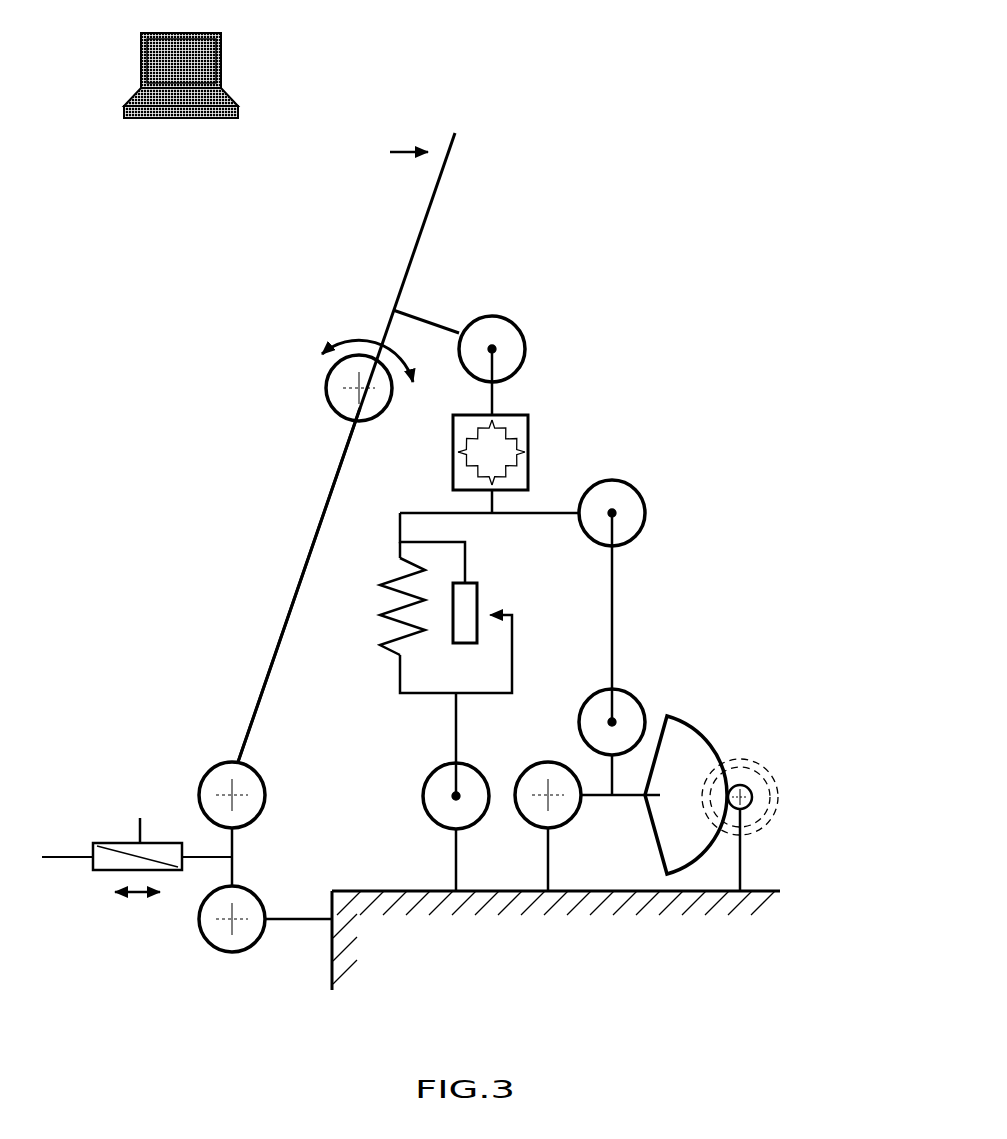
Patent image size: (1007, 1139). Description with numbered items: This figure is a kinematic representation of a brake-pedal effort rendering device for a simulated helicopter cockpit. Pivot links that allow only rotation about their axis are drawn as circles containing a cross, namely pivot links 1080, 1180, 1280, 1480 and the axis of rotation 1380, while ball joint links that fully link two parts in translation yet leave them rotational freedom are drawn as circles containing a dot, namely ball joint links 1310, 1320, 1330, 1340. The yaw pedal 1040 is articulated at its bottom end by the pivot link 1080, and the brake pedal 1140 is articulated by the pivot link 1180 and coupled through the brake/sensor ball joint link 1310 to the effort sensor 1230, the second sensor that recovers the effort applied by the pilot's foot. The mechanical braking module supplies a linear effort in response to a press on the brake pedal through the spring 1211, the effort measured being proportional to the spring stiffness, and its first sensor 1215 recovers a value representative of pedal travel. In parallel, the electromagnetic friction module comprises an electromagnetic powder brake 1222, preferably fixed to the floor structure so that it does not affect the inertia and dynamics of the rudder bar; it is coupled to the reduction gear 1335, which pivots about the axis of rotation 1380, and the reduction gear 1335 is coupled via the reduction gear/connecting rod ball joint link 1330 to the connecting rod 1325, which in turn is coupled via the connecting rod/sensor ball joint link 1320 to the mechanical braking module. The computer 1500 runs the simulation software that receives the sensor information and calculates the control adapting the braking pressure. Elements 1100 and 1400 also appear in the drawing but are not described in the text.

The computer 1500 is at (212, 30).
The brake pedal 1140 is at (435, 192).
The yaw pedal 1040 is at (318, 520).
The pivot link 1180 is at (328, 400).
The brake/sensor ball joint link 1310 is at (515, 318).
The effort sensor 1230 is at (530, 430).
The connecting rod/sensor ball joint link 1320 is at (640, 490).
The connecting rod 1325 is at (614, 607).
The reduction gear/connecting rod ball joint link 1330 is at (633, 690).
The reduction gear 1335 is at (622, 798).
The spring 1211 is at (365, 608).
The first sensor 1215 is at (478, 598).
The ball joint link 1340 is at (423, 780).
The axis of rotation 1380 is at (525, 765).
The electromagnetic powder brake 1222 is at (762, 762).
The pivot link 1480 is at (770, 807).
The pivot link 1080 is at (215, 770).
The pivot link 1280 is at (255, 885).
The linear actuator 1100 is at (120, 840).
The frame ground 1400 is at (363, 893).